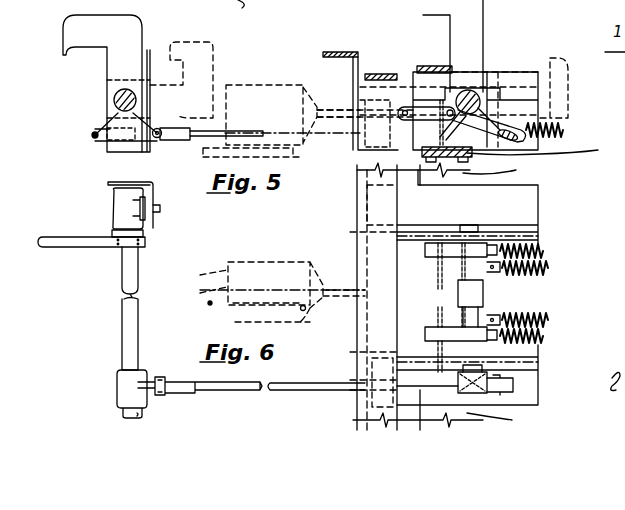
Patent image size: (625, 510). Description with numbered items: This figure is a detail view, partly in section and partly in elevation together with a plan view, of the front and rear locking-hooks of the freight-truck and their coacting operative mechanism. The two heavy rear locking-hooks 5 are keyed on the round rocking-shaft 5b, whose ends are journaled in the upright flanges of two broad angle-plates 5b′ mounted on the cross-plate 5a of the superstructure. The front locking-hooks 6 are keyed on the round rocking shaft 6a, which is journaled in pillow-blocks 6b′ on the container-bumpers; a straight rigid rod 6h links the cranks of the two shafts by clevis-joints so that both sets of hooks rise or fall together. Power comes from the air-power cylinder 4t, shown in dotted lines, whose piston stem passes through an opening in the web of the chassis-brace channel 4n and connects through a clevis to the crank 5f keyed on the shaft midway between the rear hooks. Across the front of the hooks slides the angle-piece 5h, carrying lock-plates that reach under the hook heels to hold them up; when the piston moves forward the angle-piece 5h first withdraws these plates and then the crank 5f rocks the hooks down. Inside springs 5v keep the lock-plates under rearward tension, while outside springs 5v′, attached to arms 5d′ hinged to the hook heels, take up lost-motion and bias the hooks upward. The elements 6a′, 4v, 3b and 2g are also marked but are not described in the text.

In FIG. 5, the front locking-hook 6 is at (72, 23).
In FIG. 6, the front locking-hook 6 is at (60, 245).
In FIG. 5, the rocking shaft 6a is at (108, 99).
In FIG. 6, the rocking shaft 6a is at (127, 270).
In FIG. 5, the link block 6a′ is at (150, 118).
In FIG. 6, the link block 6a′ is at (127, 385).
In FIG. 6, the pillow-block 6b′ is at (117, 207).
In FIG. 6, the rigid rod 6h is at (278, 390).
In FIG. 5, the air-power cylinder 4t is at (290, 92).
In FIG. 6, the air-power cylinder 4t is at (287, 263).
In FIG. 5, the angle bracket 4v is at (343, 52).
In FIG. 5, the channel 4n is at (365, 76).
In FIG. 5, the rear locking-hook 5 is at (423, 15).
In FIG. 6, the rear locking-hook 5 is at (425, 256).
In FIG. 5, the cross-plate 5a is at (533, 153).
In FIG. 6, the cross-plate 5a is at (445, 296).
In FIG. 5, the rocking-shaft 5b is at (466, 90).
In FIG. 6, the rocking-shaft 5b is at (468, 224).
In FIG. 6, the angle-plate 5b′ is at (535, 233).
In FIG. 6, the arm 5d′ is at (493, 250).
In FIG. 5, the crank 5f is at (480, 110).
In FIG. 6, the angle-piece 5h is at (538, 408).
In FIG. 6, the inside spring 5v is at (556, 268).
In FIG. 5, the outside spring 5v′ is at (563, 129).
In FIG. 6, the outside spring 5v′ is at (550, 251).
In FIG. 5, the part 3b is at (600, 0).
In FIG. 5, the part 2g is at (614, 17).